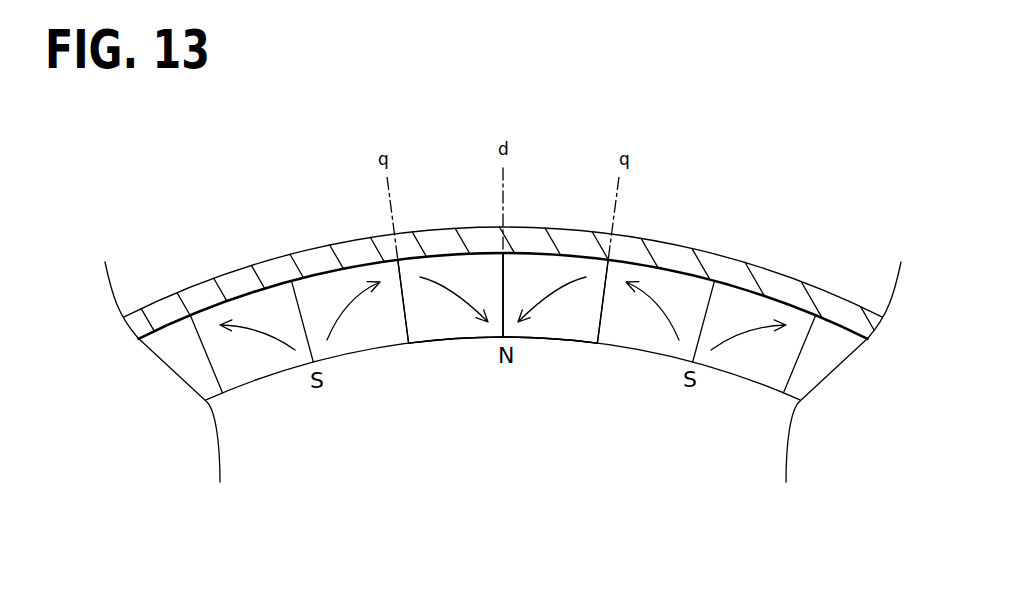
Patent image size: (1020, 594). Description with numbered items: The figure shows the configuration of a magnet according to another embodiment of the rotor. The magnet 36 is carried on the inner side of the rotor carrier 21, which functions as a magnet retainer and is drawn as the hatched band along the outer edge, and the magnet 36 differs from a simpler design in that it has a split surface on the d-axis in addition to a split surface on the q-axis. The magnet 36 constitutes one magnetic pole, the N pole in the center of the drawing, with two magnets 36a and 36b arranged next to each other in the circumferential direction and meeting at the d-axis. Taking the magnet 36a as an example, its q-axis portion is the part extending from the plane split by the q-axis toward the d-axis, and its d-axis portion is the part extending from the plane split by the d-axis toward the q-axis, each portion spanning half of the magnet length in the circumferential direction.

The rotor carrier 21 is at (344, 241).
The magnet 36 is at (617, 417).
The magnet 36a is at (467, 336).
The magnet 36b is at (557, 337).